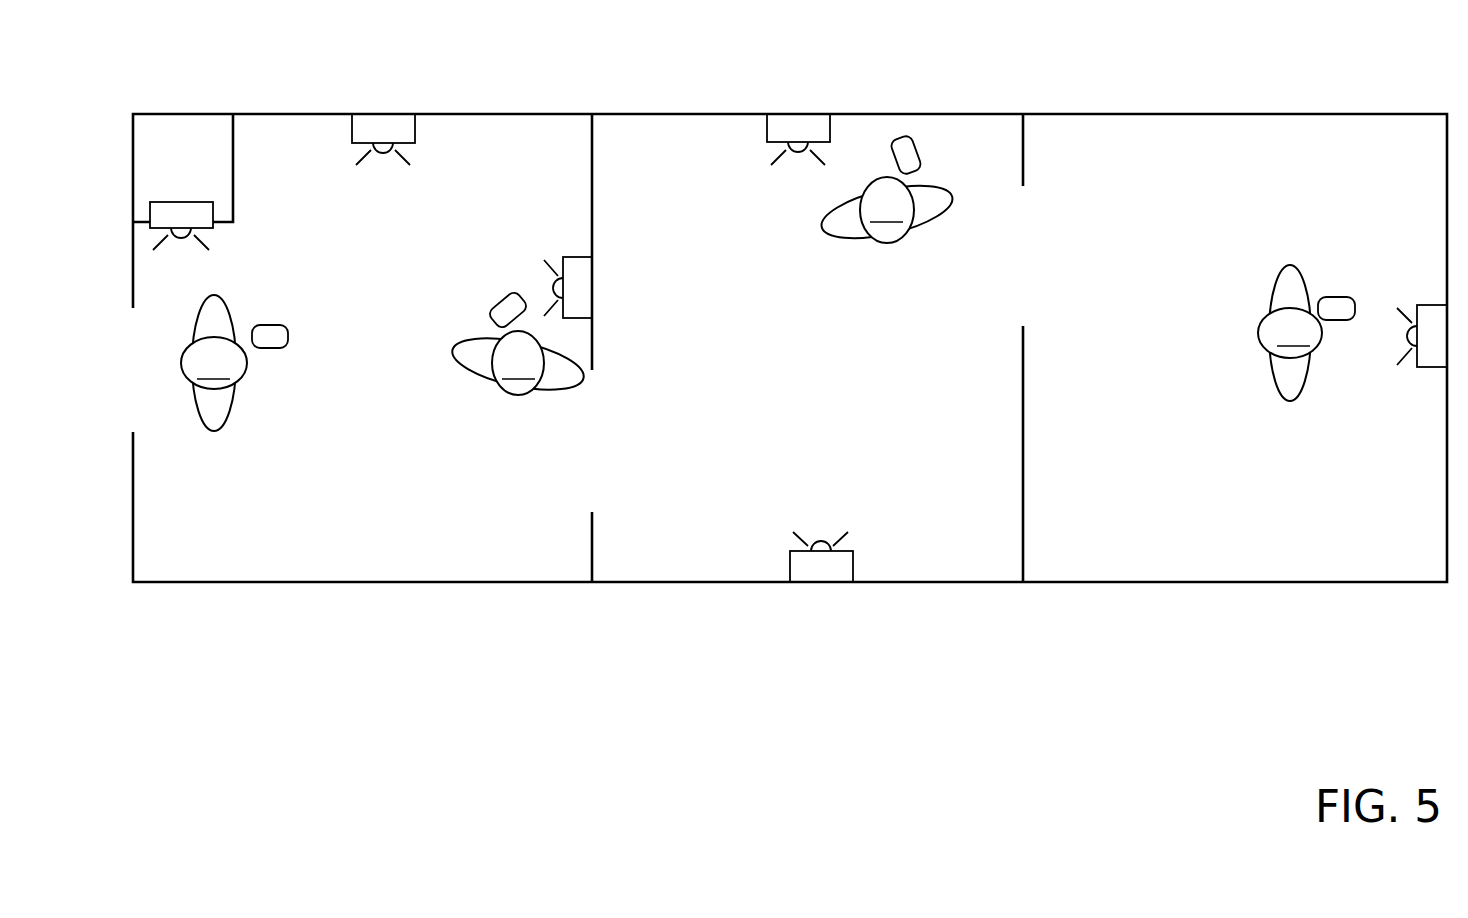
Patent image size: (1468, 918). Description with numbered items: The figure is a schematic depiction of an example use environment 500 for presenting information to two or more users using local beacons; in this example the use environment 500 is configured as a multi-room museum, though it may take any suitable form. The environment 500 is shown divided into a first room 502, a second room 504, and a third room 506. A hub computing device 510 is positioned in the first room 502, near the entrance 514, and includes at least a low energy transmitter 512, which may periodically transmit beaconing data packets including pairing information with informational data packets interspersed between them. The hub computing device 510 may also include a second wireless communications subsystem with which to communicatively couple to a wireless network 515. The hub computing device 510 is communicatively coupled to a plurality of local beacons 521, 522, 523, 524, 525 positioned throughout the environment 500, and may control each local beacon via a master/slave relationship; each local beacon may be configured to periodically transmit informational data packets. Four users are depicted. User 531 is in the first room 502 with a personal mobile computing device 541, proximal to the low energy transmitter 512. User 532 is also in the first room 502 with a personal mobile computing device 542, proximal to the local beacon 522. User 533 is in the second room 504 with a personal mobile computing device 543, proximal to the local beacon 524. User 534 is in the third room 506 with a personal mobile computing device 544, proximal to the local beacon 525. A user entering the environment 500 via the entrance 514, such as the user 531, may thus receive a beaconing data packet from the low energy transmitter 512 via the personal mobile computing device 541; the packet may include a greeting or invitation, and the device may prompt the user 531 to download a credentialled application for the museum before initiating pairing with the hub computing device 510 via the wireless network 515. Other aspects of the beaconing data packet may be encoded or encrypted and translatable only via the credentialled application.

The use environment 500 is at (780, 37).
The wireless network 515 is at (630, 89).
The entrance 514 is at (140, 366).
The hub computing device 510 is at (193, 182).
The low energy transmitter 512 is at (197, 227).
The first room 502 is at (573, 572).
The second room 504 is at (1010, 572).
The third room 506 is at (1435, 572).
The local beacon 521 is at (398, 141).
The local beacon 522 is at (582, 257).
The local beacon 523 is at (837, 576).
The local beacon 524 is at (814, 140).
The local beacon 525 is at (1432, 368).
The user 531 is at (230, 379).
The user 532 is at (535, 379).
The user 533 is at (903, 222).
The user 534 is at (1310, 346).
The personal mobile computing device 541 is at (268, 325).
The personal mobile computing device 542 is at (498, 300).
The personal mobile computing device 543 is at (918, 150).
The personal mobile computing device 544 is at (1342, 297).